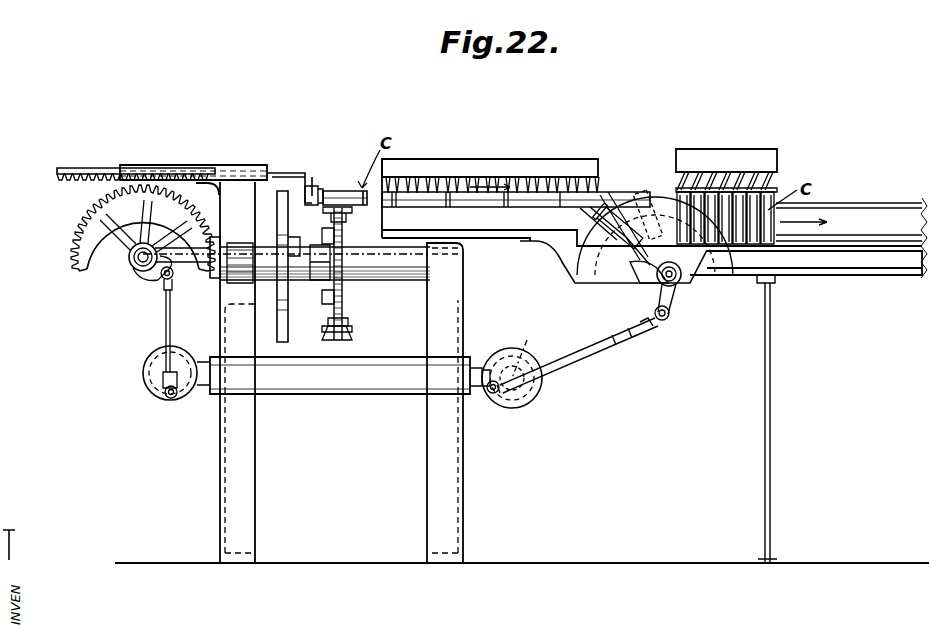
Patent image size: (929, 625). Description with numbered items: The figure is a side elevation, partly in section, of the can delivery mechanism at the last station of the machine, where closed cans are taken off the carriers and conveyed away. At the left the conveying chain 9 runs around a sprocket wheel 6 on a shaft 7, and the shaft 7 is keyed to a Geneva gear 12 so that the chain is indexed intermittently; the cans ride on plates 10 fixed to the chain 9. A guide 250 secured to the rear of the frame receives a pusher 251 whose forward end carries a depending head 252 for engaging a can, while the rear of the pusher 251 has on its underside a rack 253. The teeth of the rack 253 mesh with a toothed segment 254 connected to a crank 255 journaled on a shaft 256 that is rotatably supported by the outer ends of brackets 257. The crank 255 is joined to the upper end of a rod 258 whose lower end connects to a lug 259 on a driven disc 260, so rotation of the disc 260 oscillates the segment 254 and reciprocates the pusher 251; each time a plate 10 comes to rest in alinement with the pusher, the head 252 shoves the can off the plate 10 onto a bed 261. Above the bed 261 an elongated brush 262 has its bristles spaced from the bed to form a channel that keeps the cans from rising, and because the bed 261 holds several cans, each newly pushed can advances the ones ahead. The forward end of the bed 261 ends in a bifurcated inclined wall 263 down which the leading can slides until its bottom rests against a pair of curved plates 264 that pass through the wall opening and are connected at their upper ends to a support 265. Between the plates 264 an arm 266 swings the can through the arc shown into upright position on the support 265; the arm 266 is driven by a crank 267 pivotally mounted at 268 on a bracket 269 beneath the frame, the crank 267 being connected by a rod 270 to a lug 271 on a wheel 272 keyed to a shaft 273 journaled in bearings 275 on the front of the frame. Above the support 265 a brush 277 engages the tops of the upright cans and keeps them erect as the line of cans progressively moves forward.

The rack 253 is at (70, 166).
The guide 250 is at (249, 165).
The pusher 251 is at (306, 170).
The depending head 252 is at (312, 186).
The segment 254 is at (80, 246).
The crank 255 is at (163, 276).
The shaft 256 is at (130, 262).
The brackets 257 is at (197, 268).
The rod 258 is at (164, 330).
The lug 259 is at (168, 398).
The disc 260 is at (147, 382).
The bed 261 is at (455, 207).
The elongated brush 262 is at (538, 180).
The inclined wall 263 is at (610, 222).
The curved plates 264 is at (626, 268).
The support 265 is at (742, 250).
The arm 266 is at (647, 275).
The crank 267 is at (670, 316).
The pivot 268 is at (675, 278).
The bracket 269 is at (546, 252).
The rod 270 is at (622, 338).
The lug 271 is at (490, 396).
The wheel 272 is at (530, 398).
The shaft 273 is at (533, 349).
The bearings 275 is at (481, 368).
The brush 277 is at (753, 165).
The sprocket wheel 6 is at (343, 293).
The shaft 7 is at (403, 284).
The chain 9 is at (340, 330).
The plates 10 is at (349, 323).
The Geneva gear 12 is at (289, 338).